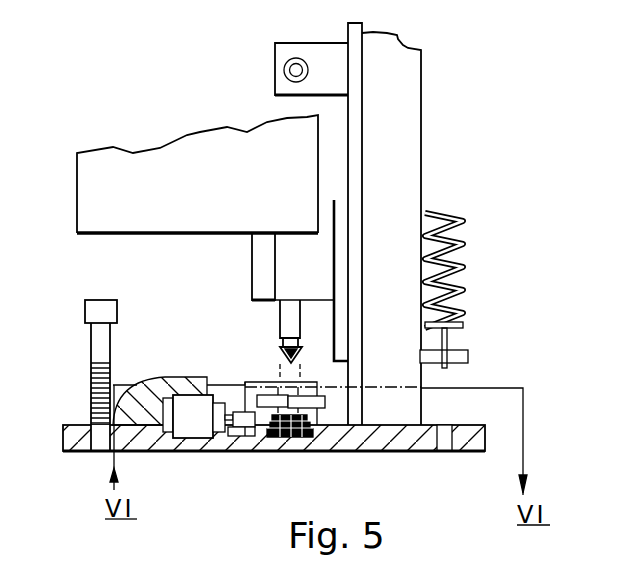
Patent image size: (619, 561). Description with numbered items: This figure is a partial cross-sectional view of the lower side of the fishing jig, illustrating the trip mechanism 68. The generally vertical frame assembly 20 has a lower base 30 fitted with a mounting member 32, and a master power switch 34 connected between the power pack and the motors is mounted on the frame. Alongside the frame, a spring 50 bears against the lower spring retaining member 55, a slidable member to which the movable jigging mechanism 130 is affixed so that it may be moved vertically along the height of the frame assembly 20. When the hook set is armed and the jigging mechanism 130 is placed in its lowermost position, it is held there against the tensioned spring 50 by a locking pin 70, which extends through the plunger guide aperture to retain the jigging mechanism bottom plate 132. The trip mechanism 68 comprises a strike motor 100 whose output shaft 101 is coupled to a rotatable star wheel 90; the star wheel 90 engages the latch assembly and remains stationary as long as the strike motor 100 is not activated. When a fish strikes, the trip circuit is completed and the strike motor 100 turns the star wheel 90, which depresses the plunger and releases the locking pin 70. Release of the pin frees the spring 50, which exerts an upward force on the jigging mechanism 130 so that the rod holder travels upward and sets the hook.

The frame assembly 20 is at (405, 200).
The lower base 30 is at (481, 440).
The mounting member 32 is at (97, 345).
The master power switch 34 is at (287, 64).
The spring 50 is at (463, 227).
The lower spring retaining member 55 is at (466, 358).
The trip mechanism 68 is at (84, 470).
The locking pin 70 is at (280, 343).
The star wheel 90 is at (322, 407).
The strike motor 100 is at (192, 427).
The output shaft 101 is at (247, 428).
The jigging mechanism 130 is at (204, 190).
The jigging mechanism bottom plate 132 is at (290, 285).